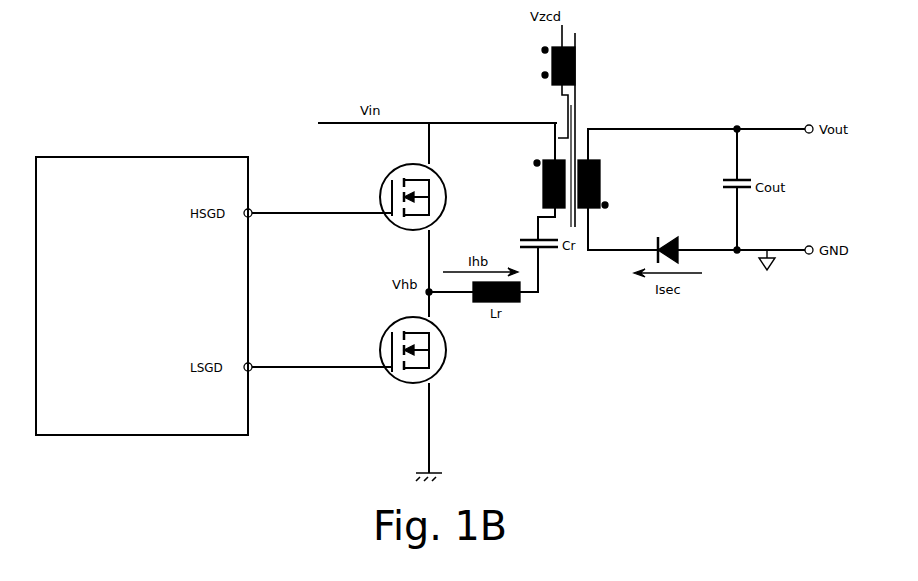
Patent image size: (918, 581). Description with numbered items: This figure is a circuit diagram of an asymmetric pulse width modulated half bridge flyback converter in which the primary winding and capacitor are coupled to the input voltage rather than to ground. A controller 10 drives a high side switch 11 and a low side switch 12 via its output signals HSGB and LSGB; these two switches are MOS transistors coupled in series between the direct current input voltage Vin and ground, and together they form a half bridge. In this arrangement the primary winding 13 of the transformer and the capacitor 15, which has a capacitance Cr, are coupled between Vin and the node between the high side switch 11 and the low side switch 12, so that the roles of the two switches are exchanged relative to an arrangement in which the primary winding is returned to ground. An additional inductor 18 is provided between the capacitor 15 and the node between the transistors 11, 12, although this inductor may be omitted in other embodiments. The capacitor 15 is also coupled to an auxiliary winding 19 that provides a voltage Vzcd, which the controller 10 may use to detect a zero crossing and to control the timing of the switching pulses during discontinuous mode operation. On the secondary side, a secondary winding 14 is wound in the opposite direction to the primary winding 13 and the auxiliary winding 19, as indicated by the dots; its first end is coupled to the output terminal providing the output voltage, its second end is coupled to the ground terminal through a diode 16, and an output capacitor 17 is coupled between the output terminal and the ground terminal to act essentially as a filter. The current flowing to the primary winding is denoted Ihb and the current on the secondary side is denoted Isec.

The controller 10 is at (135, 157).
The high side switch 11 is at (390, 175).
The low side switch 12 is at (392, 326).
The primary winding 13 is at (541, 160).
The secondary winding 14 is at (600, 165).
The capacitor 15 is at (556, 253).
The diode 16 is at (668, 235).
The output capacitor 17 is at (745, 181).
The additional inductor 18 is at (518, 301).
The auxiliary winding 19 is at (543, 73).